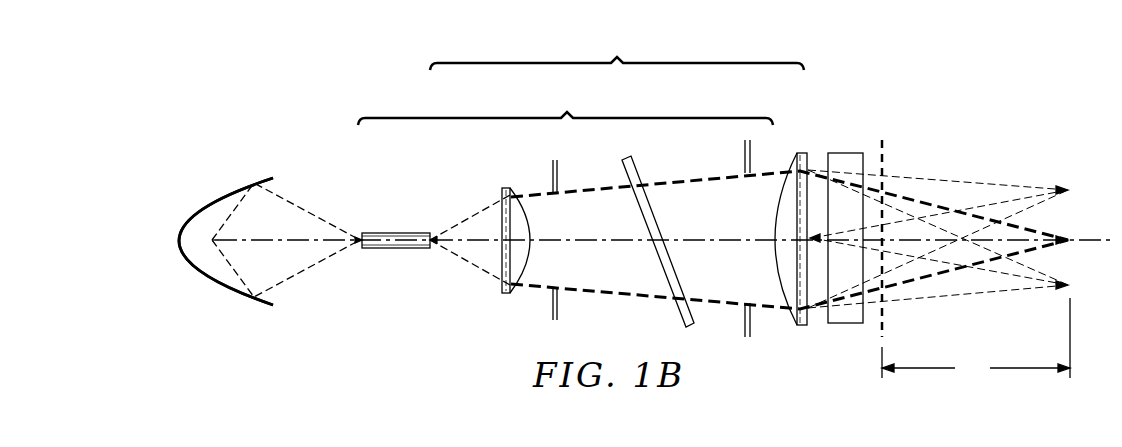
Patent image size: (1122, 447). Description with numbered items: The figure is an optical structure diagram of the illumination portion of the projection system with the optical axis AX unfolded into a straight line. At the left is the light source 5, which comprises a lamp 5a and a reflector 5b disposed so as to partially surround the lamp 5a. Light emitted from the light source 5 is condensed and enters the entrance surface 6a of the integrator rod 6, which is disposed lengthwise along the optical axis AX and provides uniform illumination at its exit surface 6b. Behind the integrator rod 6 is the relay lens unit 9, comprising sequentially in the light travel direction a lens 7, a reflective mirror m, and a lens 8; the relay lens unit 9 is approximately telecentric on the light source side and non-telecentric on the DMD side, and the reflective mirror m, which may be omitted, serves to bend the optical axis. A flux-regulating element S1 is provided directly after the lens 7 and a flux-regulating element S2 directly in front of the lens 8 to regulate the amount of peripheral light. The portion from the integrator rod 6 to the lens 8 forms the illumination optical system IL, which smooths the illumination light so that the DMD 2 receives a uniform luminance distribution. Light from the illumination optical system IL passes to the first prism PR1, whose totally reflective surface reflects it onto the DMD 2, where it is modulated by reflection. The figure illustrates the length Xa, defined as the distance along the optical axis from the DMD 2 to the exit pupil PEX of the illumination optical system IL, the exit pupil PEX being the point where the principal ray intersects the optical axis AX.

The light source 5 is at (218, 302).
The lamp 5a is at (211, 238).
The reflector 5b is at (218, 196).
The integrator rod 6 is at (393, 249).
The entrance surface 6a is at (360, 233).
The exit surface 6b is at (430, 233).
The lens 7 is at (507, 296).
The lens 8 is at (773, 219).
The relay lens unit 9 is at (617, 51).
The illumination optical system IL is at (565, 105).
The flux-regulating element S1 is at (552, 173).
The flux-regulating element S2 is at (742, 160).
The reflective mirror m is at (653, 256).
The optical axis AX is at (730, 242).
The first prism PR1 is at (845, 152).
The DMD 2 is at (884, 162).
The exit pupil PEX is at (1069, 236).
The distance Xa is at (976, 341).